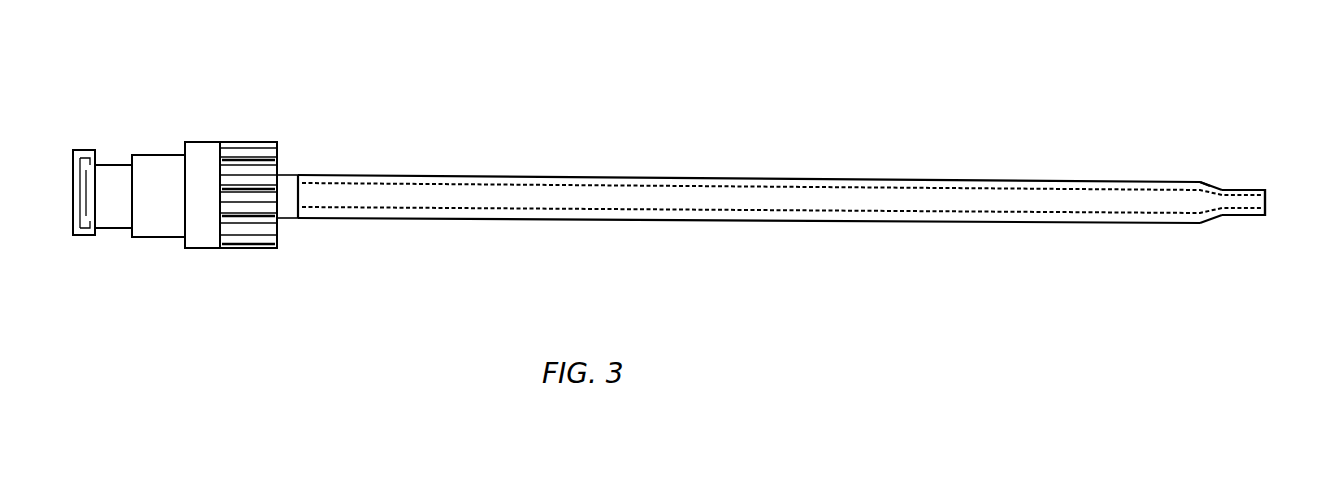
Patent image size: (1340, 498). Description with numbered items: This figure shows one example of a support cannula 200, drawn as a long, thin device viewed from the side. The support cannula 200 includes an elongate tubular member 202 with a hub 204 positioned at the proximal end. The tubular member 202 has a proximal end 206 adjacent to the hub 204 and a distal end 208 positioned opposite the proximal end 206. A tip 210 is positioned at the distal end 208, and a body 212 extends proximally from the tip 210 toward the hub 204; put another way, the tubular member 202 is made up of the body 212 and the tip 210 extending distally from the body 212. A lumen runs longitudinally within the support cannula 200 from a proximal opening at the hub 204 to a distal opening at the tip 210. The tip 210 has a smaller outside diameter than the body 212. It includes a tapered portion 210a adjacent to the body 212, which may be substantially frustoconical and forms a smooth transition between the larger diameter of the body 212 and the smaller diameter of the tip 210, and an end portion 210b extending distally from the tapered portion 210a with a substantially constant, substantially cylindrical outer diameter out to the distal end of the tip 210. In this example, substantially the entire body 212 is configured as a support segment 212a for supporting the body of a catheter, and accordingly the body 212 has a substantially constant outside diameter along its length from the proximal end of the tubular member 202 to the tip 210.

The support cannula 200 is at (727, 86).
The elongate tubular member 202 is at (780, 175).
The hub 204 is at (224, 139).
The proximal end 206 is at (312, 171).
The distal end 208 is at (1243, 219).
The tip 210 is at (1244, 192).
The tapered portion 210a is at (1213, 186).
The end portion 210b is at (1250, 191).
The body 212 is at (1004, 181).
The support segment 212a is at (690, 223).